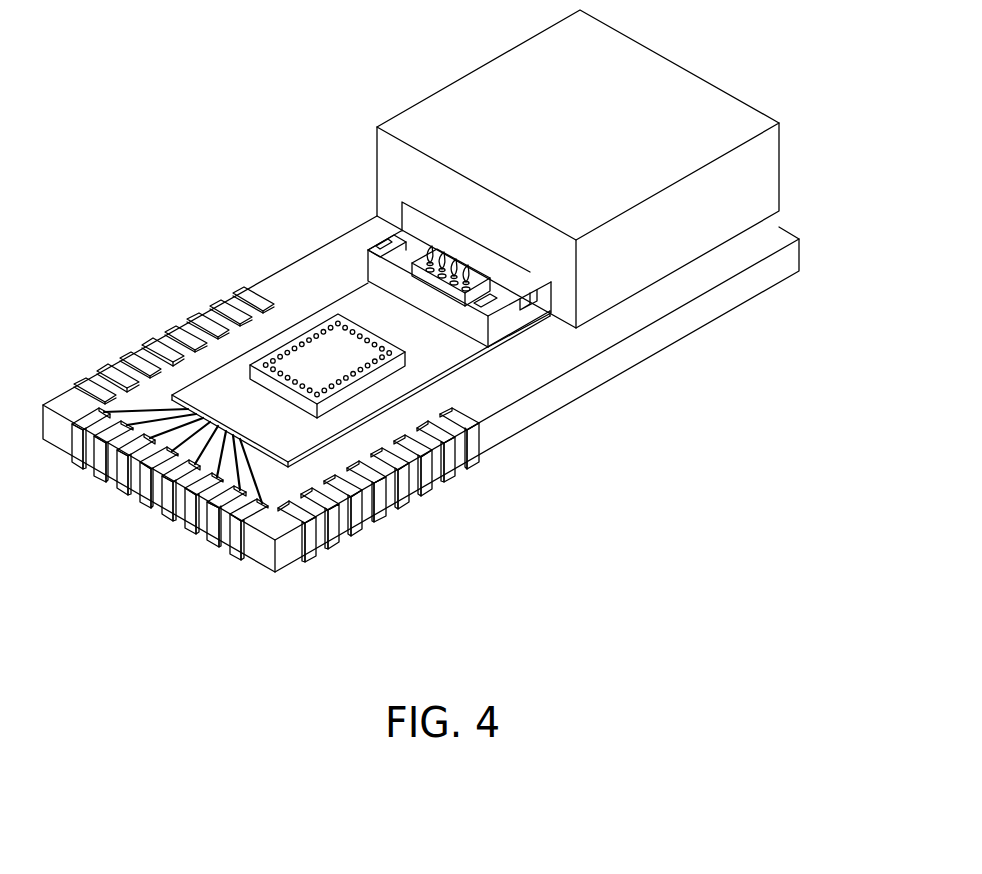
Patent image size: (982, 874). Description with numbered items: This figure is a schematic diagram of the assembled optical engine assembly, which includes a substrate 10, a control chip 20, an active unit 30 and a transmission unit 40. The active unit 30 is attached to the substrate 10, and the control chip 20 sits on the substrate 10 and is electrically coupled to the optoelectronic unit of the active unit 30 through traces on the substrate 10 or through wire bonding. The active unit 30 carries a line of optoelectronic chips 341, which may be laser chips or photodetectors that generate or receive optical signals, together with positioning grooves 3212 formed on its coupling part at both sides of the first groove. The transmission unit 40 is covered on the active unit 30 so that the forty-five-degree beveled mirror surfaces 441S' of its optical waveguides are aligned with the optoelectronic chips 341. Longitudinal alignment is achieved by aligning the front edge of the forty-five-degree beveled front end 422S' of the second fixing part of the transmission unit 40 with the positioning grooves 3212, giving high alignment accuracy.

The substrate 10 is at (348, 519).
The control chip 20 is at (303, 350).
The active unit 30 is at (507, 280).
The positioning grooves 3212 is at (497, 328).
The optoelectronic chips 341 is at (385, 247).
The 45-degree beveled front end 422S' is at (602, 341).
The 45-degree beveled mirror surfaces 441S' is at (421, 175).
The transmission unit 40 is at (678, 257).